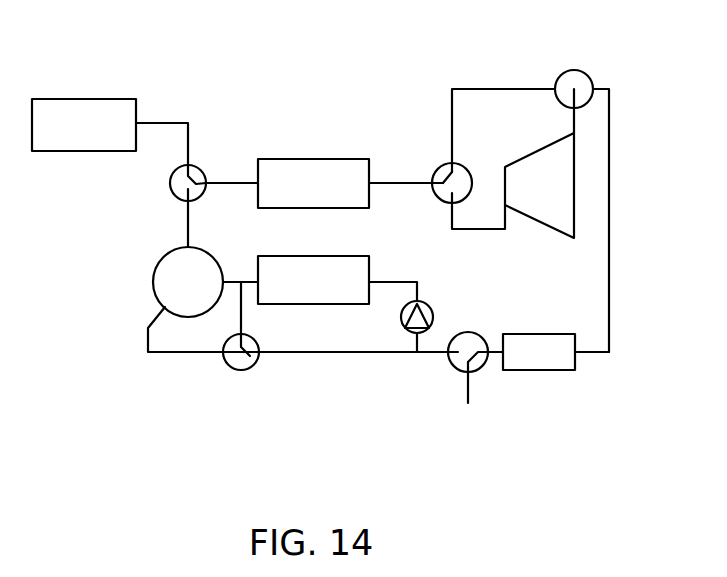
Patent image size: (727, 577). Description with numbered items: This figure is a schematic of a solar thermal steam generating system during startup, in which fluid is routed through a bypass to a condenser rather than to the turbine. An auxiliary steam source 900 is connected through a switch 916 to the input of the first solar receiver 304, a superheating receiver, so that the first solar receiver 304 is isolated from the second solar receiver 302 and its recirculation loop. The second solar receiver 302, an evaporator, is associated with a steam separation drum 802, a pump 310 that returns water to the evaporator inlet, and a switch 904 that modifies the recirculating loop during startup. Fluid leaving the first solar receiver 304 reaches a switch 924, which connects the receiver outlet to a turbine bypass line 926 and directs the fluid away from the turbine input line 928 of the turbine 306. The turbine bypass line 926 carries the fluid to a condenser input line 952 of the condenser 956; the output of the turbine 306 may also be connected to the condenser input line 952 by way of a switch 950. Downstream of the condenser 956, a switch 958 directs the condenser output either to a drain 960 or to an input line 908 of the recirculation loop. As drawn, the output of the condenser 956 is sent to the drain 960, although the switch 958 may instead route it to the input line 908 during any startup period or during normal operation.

The auxiliary steam source 900 is at (84, 125).
The switch 916 is at (126, 195).
The first solar receiver 304 is at (313, 183).
The second solar receiver 302 is at (313, 280).
The steam separation drum 802 is at (188, 282).
The switch 904 is at (202, 389).
The pump 310 is at (363, 322).
The switch 924 is at (404, 149).
The turbine bypass line 926 is at (459, 97).
The switch 950 is at (532, 58).
The condenser input line 952 is at (635, 219).
The turbine 306 is at (539, 185).
The turbine input line 928 is at (499, 255).
The condenser 956 is at (539, 352).
The switch 958 is at (426, 384).
The drain 960 is at (503, 416).
The input line of the recirculation loop 908 is at (298, 398).